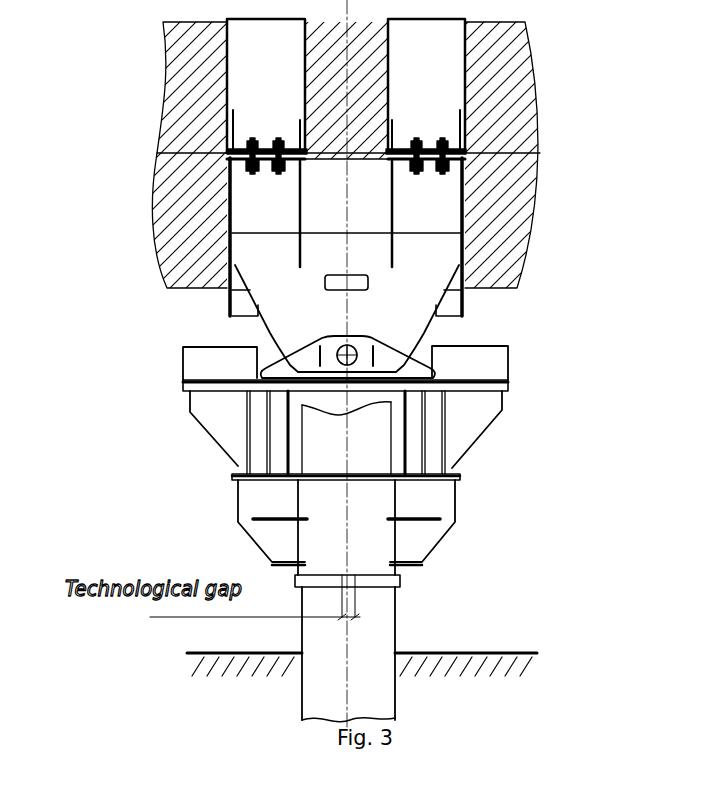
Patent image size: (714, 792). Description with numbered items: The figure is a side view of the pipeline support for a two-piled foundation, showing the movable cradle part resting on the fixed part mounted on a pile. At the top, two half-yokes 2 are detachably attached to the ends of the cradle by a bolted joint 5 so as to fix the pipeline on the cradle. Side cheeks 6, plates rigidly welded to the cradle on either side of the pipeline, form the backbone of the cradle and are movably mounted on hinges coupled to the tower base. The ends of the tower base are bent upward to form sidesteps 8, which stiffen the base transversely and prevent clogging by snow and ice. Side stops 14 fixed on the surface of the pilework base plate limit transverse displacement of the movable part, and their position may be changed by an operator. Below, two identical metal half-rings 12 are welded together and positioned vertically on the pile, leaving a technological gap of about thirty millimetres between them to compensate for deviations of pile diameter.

The half-yokes 2 is at (432, 85).
The bolted joint 5 is at (465, 150).
The side cheeks 6 is at (423, 266).
The side stops 14 is at (453, 352).
The tower base sidestep 8 is at (425, 373).
The half-rings 12 is at (399, 580).